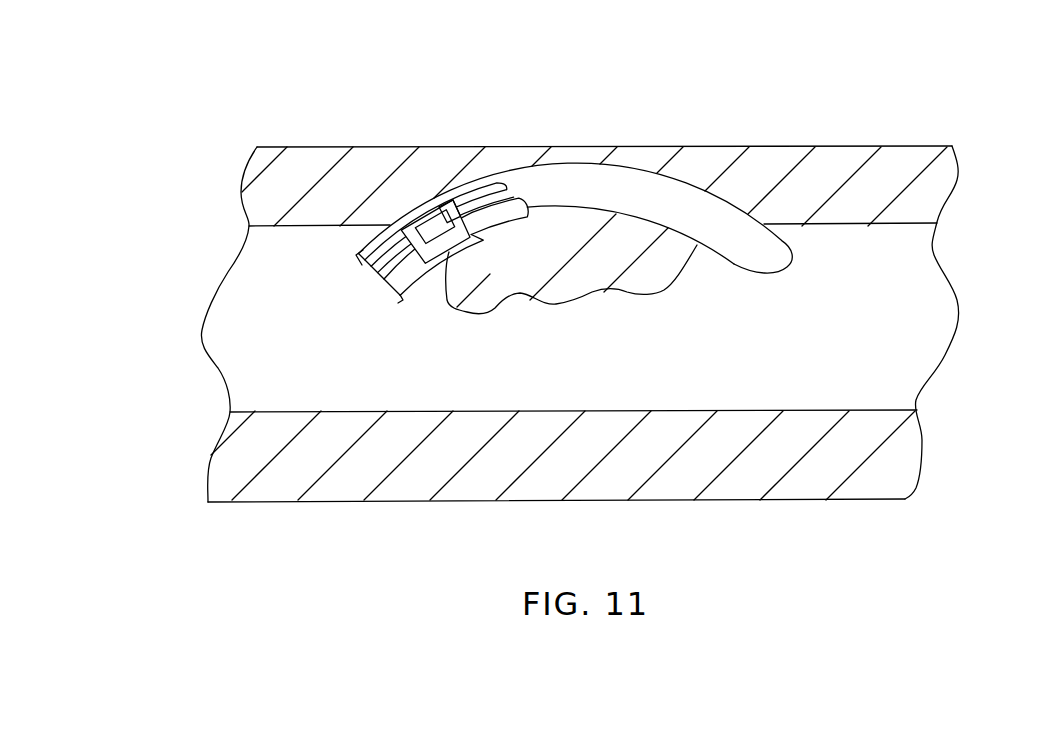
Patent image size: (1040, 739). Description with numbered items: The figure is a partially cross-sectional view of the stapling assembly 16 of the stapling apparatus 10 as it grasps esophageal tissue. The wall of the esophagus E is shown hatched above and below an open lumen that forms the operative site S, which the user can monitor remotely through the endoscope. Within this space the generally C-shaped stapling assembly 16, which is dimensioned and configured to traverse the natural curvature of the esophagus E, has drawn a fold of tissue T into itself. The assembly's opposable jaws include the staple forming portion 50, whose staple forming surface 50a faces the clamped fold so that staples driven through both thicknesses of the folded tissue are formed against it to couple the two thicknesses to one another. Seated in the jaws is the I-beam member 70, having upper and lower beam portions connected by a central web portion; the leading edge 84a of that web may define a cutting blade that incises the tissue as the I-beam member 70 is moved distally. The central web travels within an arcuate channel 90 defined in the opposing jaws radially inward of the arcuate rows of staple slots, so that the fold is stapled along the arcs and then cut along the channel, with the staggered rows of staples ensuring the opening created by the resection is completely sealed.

The stapling apparatus 10 is at (678, 82).
The stapling assembly 16 is at (661, 174).
The staple forming portion 50 is at (377, 258).
The staple forming surface 50a is at (455, 190).
The leading edge of the central web portion 84a is at (477, 192).
The I-beam member 70 is at (362, 250).
The arcuate channel 90 is at (380, 284).
The esophagus E is at (874, 146).
The tissue fold T is at (587, 278).
The operative site S is at (404, 378).